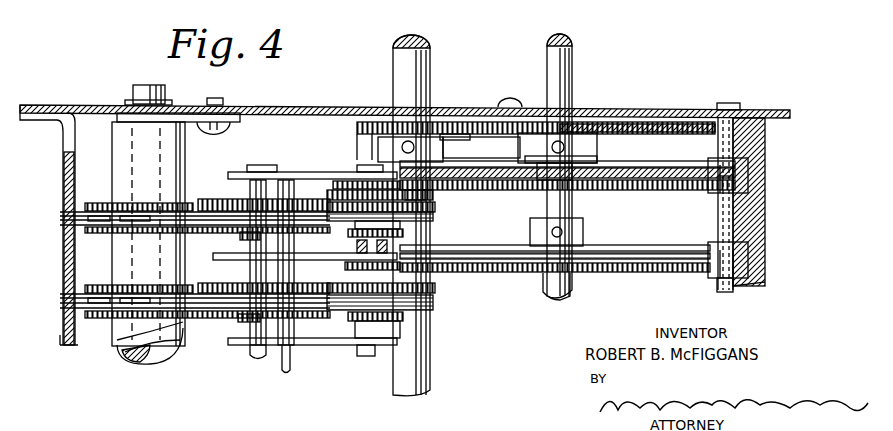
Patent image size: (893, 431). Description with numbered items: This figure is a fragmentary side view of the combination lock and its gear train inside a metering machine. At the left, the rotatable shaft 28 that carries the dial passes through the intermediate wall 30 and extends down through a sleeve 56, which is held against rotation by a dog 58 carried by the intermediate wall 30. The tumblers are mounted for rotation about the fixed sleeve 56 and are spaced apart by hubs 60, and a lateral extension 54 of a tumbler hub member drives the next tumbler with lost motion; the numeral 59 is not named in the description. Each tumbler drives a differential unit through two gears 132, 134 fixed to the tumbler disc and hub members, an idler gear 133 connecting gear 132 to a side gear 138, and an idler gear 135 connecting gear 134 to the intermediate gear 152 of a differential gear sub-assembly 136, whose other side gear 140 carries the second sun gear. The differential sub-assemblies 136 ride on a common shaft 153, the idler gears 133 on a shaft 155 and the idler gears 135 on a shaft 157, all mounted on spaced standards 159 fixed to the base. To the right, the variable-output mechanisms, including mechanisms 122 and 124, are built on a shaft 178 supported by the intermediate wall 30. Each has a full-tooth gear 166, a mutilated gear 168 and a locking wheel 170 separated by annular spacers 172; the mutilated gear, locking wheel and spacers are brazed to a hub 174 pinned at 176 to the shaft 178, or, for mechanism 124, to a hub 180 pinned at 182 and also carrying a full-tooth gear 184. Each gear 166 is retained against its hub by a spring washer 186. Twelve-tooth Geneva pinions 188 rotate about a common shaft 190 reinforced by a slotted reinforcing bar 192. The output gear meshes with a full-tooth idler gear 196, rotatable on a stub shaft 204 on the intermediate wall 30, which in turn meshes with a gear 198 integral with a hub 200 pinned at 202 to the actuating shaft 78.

The rotatable shaft 28 is at (145, 89).
The intermediate wall 30 is at (286, 106).
The lateral extension 54 is at (100, 290).
The sleeve 56 is at (180, 360).
The dog 58 is at (177, 112).
The lower wall end 59 is at (103, 333).
The hub 60 is at (177, 173).
The actuating shaft 78 is at (418, 62).
The variable-output mechanism 122 is at (707, 291).
The variable-output mechanism 124 is at (705, 206).
The gear 132 is at (195, 235).
The idler gear 133 is at (241, 240).
The gear 134 is at (96, 203).
The idler gear 135 is at (230, 202).
The differential gear sub-assembly 136 is at (412, 218).
The side gear 138 is at (403, 235).
The side gear 140 is at (322, 271).
The intermediate gear 152 is at (434, 207).
The shaft 153 is at (362, 357).
The shaft 155 is at (288, 371).
The shaft 157 is at (253, 349).
The standard 159 is at (302, 172).
The full-tooth gear 166 is at (663, 191).
The mutilated gear 168 is at (684, 173).
The locking wheel 170 is at (660, 168).
The annular spacer 172 is at (515, 191).
The hub 174 is at (577, 227).
The pin 176 is at (561, 231).
The shaft 178 is at (571, 60).
The hub 180 is at (586, 158).
The pin 182 is at (586, 147).
The full-tooth gear 184 is at (648, 124).
The spring washer 186 is at (533, 193).
The Geneva pinion 188 is at (736, 171).
The shaft 190 is at (720, 224).
The reinforcing bar 192 is at (759, 220).
The idler gear 196 is at (467, 126).
The full-tooth gear 198 is at (368, 123).
The hub 200 is at (481, 150).
The pin 202 is at (402, 147).
The stub shaft 204 is at (510, 101).